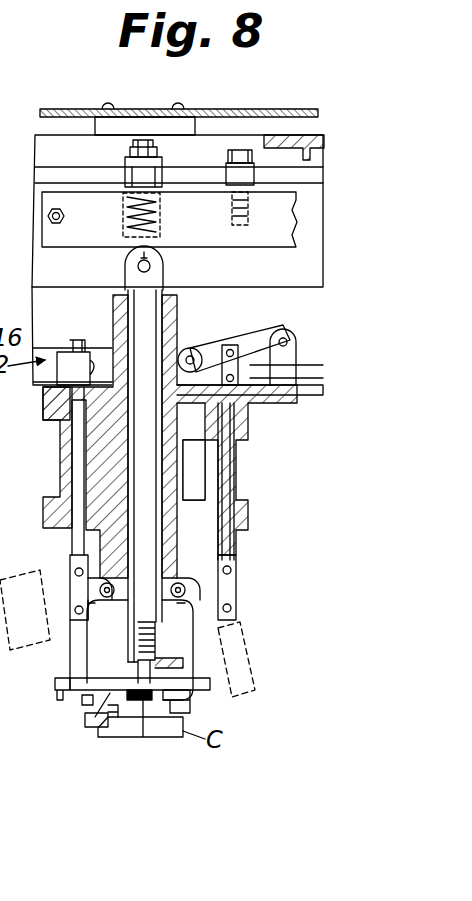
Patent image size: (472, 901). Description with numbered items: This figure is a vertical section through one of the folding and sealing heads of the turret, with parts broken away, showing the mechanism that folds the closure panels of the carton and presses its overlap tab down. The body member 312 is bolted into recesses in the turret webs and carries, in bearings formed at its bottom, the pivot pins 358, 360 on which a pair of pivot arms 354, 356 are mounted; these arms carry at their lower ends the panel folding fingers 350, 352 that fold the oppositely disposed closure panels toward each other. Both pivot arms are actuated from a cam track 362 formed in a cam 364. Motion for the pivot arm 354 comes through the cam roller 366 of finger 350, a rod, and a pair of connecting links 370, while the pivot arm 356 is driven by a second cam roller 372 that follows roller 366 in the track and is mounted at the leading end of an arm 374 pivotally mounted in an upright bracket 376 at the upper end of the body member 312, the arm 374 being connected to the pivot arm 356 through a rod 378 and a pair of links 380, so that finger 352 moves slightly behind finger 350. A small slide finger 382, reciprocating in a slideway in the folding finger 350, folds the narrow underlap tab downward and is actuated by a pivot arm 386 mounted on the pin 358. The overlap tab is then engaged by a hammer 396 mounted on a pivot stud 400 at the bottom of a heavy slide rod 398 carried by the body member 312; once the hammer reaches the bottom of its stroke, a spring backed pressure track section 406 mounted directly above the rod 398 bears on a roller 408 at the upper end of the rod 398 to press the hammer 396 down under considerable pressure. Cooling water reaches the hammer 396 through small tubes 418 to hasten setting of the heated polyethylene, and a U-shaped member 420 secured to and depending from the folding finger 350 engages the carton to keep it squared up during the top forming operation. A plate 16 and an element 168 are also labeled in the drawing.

The plate 16 is at (40, 113).
The spring backed pressure track section 406 is at (183, 203).
The roller 408 is at (136, 252).
The slide rod 398 is at (143, 303).
The cam 364 is at (306, 308).
The cam roller 366 is at (97, 352).
The flange 168 is at (72, 412).
The body member 312 is at (100, 435).
The second cam roller 372 is at (190, 350).
The arm 374 is at (247, 345).
The cam track 362 is at (309, 362).
The upright bracket 376 is at (290, 372).
The rod 378 is at (222, 453).
The pivot pin 358 is at (70, 572).
The pivot pin 360 is at (236, 574).
The connecting links 370 is at (80, 596).
The links 380 is at (185, 590).
The pivot arm 356 is at (203, 627).
The pivot arm 354 is at (77, 634).
The pivot stud 400 is at (140, 641).
The small tubes 418 is at (180, 658).
The slide finger 382 is at (63, 689).
The pivot arm 386 is at (82, 660).
The folding finger 350 is at (93, 707).
The folding finger 352 is at (187, 709).
The hammer 396 is at (140, 740).
The U-shaped member 420 is at (92, 724).